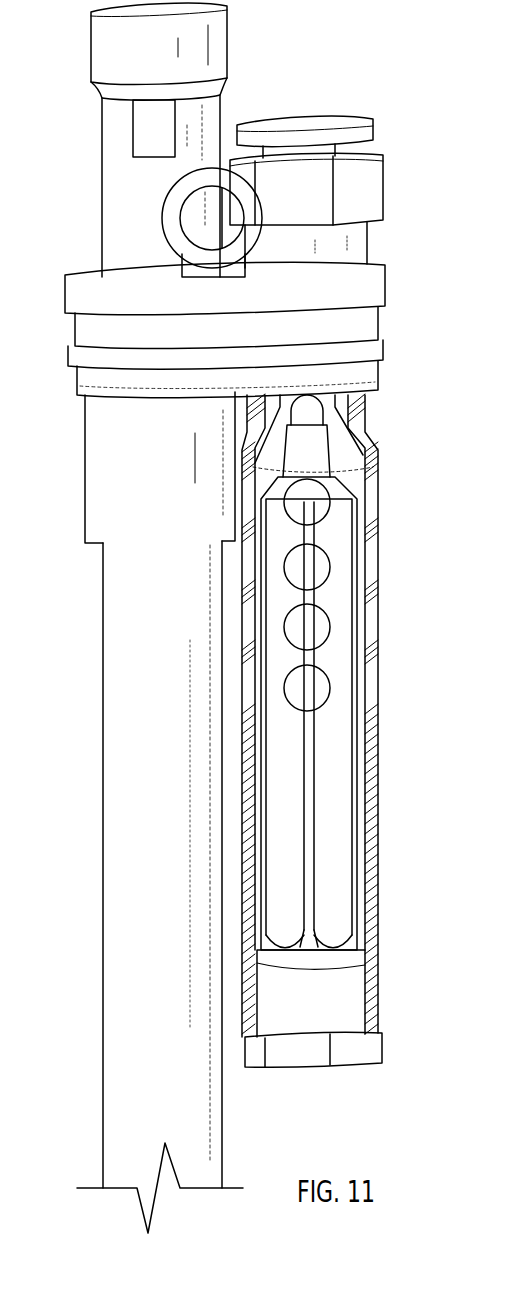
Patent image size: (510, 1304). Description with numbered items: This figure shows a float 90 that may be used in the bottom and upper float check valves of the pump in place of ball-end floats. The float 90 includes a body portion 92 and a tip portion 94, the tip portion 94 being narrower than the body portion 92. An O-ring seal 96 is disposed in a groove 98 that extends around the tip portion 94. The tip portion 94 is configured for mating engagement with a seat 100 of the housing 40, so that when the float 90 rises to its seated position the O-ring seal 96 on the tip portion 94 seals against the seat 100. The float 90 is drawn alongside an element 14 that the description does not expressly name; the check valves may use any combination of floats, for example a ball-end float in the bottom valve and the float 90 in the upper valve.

The tube 14 is at (115, 832).
The housing 40 is at (378, 862).
The float 90 is at (363, 708).
The body portion 92 is at (338, 788).
The tip portion 94 is at (318, 460).
The O-ring seal 96 is at (320, 423).
The groove 98 is at (328, 447).
The seat 100 is at (347, 462).